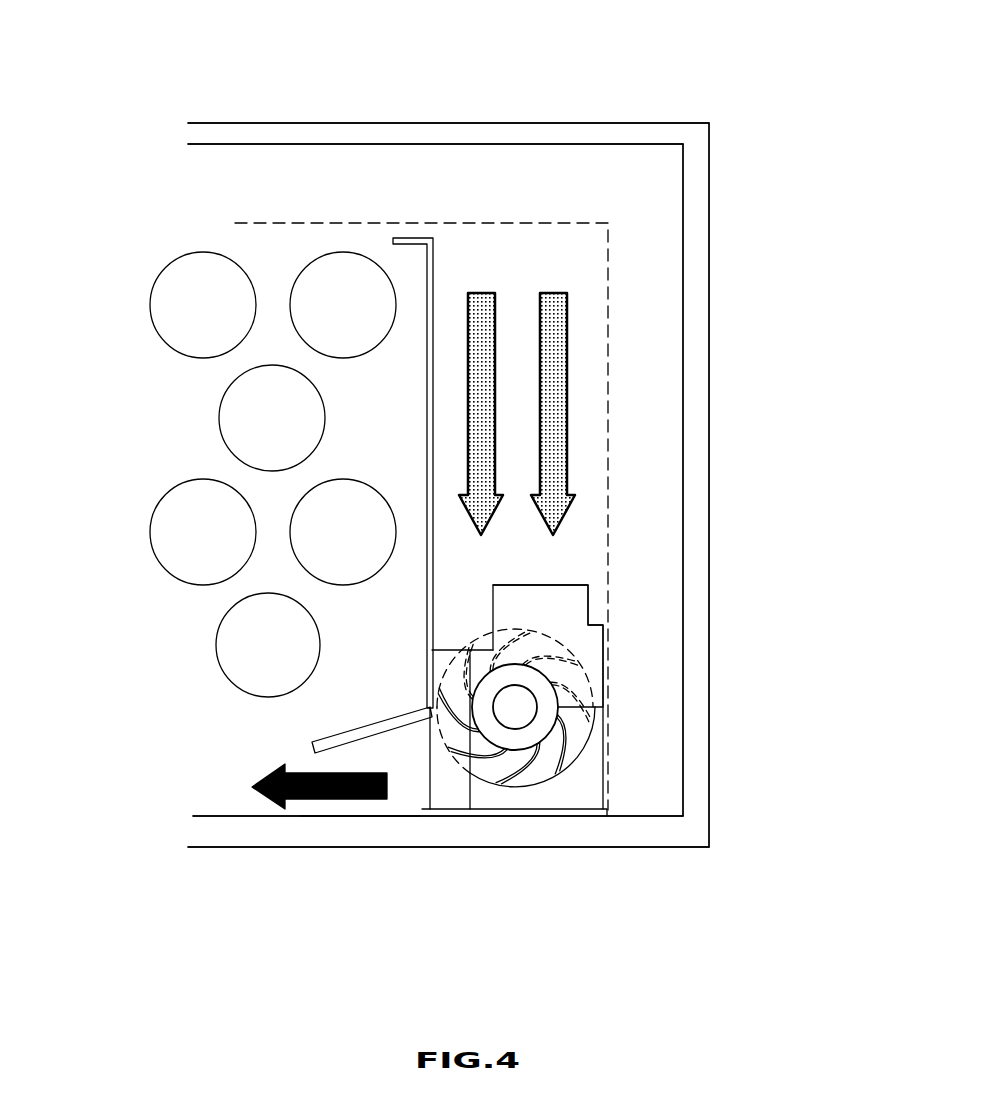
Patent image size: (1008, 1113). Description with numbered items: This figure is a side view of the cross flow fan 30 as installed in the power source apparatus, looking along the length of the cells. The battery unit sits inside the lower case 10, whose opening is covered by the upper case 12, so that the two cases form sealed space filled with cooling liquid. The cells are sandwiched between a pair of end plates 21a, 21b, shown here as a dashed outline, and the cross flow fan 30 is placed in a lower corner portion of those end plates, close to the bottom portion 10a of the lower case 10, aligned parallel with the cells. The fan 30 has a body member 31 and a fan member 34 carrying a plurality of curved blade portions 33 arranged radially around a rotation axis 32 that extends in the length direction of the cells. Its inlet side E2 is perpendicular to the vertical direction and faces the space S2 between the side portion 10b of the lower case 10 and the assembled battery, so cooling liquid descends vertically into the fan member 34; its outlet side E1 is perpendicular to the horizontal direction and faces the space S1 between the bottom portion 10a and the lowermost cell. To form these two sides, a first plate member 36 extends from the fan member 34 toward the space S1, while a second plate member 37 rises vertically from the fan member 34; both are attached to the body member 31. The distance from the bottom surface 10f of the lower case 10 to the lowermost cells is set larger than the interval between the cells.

The lower case 10 is at (722, 424).
The bottom portion 10a is at (313, 837).
The side portion 10b is at (692, 328).
The bottom surface 10f is at (365, 815).
The upper case 12 is at (520, 120).
The end plate 21a is at (237, 653).
The end plate 21b is at (608, 257).
The cross flow fan 30 is at (612, 664).
The body member 31 is at (562, 605).
The rotation axis 32 is at (513, 705).
The blade portions 33 is at (540, 790).
The fan member 34 is at (570, 778).
The first plate member 36 is at (333, 735).
The second plate member 37 is at (433, 273).
The space S1 is at (230, 790).
The space S2 is at (580, 433).
The outlet side E1 is at (413, 792).
The inlet side E2 is at (570, 542).